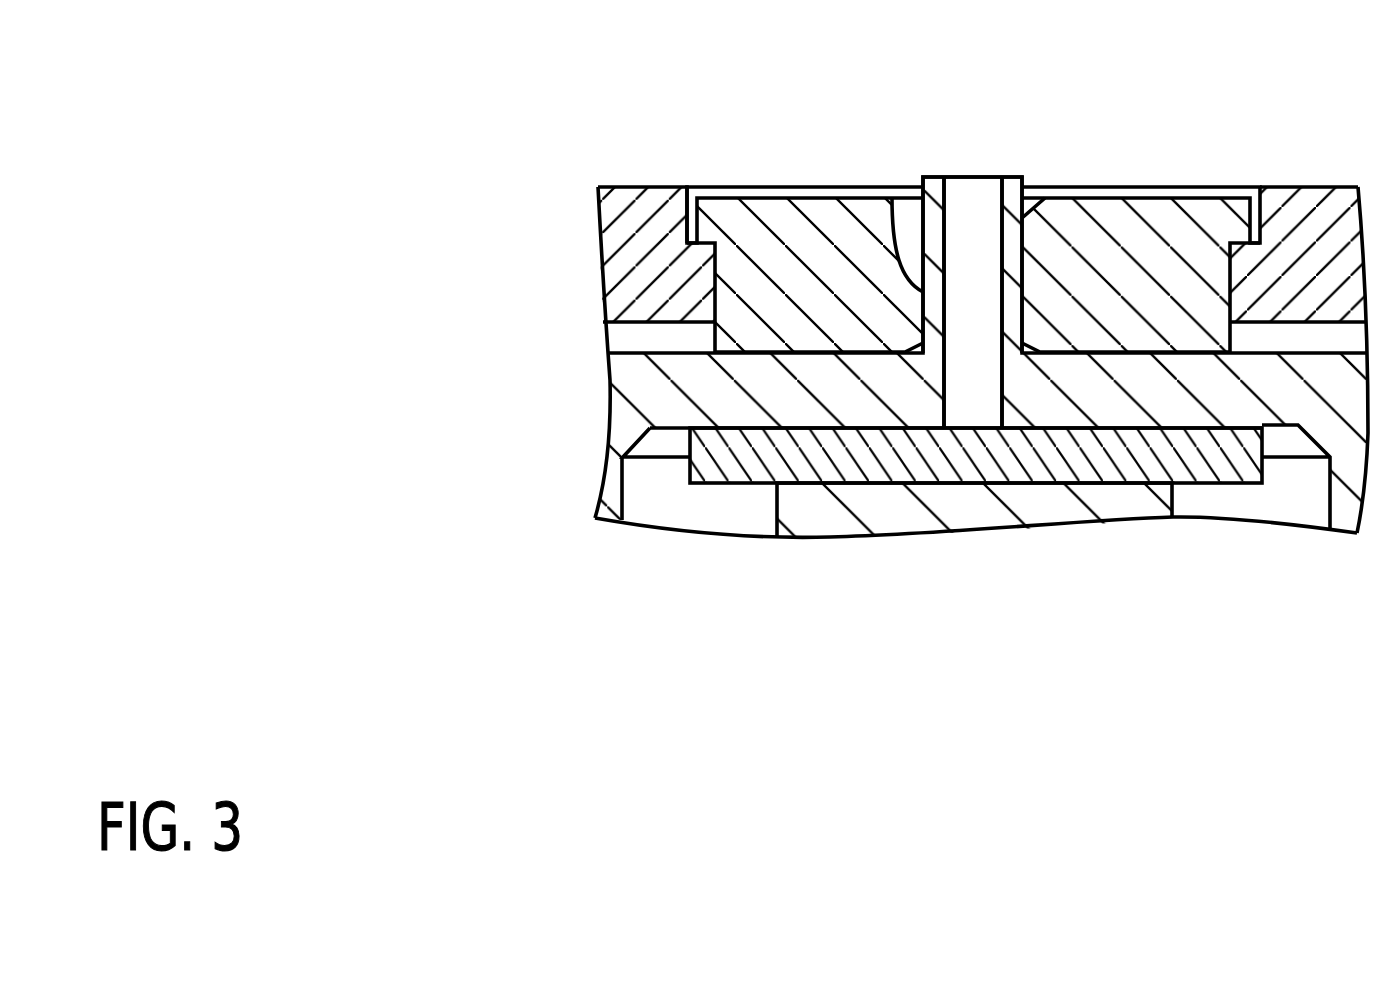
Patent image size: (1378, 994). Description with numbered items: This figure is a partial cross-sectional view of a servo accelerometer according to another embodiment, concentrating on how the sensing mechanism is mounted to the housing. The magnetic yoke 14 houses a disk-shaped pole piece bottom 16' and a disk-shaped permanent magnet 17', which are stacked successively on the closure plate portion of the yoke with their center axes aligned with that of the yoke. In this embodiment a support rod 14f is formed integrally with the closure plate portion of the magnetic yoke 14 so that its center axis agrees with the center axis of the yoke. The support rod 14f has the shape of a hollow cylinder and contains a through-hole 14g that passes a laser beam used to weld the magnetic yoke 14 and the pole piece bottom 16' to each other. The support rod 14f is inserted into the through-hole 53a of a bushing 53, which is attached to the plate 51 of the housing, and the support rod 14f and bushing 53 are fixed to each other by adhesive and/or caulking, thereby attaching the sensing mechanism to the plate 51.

The magnetic yoke 14 is at (628, 372).
The through-hole 14g is at (1000, 235).
The support rod 14f is at (1012, 172).
The plate 51 is at (628, 187).
The bushing 53 is at (777, 212).
The through-hole 53a is at (893, 240).
The pole piece bottom 16' is at (969, 528).
The permanent magnet 17' is at (974, 554).